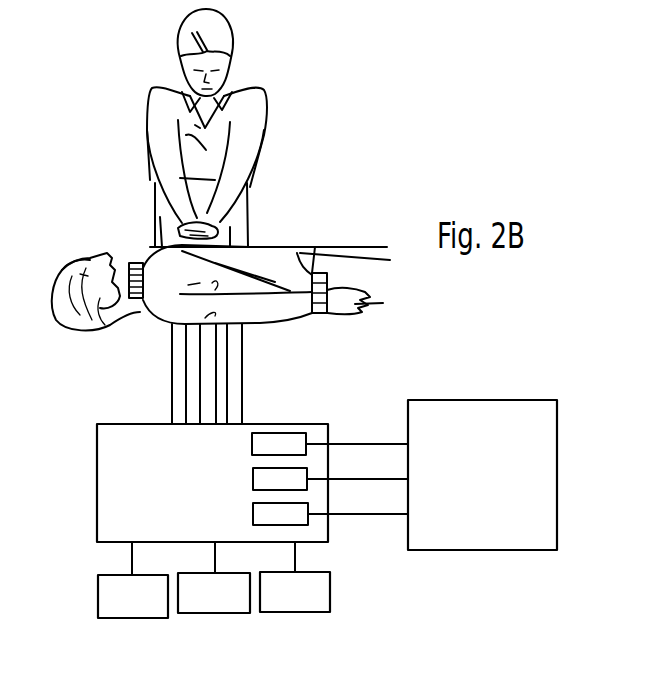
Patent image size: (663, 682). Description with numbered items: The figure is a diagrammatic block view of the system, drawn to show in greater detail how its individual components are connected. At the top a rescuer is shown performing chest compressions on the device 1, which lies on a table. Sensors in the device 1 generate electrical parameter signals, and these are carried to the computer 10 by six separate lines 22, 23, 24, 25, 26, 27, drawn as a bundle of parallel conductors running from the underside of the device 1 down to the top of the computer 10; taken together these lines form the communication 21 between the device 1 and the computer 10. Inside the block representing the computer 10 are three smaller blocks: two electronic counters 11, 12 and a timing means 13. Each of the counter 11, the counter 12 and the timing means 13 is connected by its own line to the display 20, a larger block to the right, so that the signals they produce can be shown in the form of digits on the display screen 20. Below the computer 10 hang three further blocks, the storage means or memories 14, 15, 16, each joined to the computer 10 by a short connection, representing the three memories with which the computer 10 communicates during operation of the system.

The device 1 is at (347, 263).
The computer 10 is at (100, 487).
The electronic counter 11 is at (252, 447).
The electronic counter 12 is at (253, 483).
The timing means 13 is at (253, 517).
The storage means 14 is at (135, 607).
The storage means 15 is at (216, 605).
The storage means 16 is at (298, 605).
The display 20 is at (476, 412).
The communication 21 is at (221, 374).
The line 22 is at (172, 345).
The line 23 is at (186, 357).
The line 24 is at (200, 388).
The line 25 is at (216, 340).
The line 26 is at (227, 360).
The line 27 is at (242, 400).